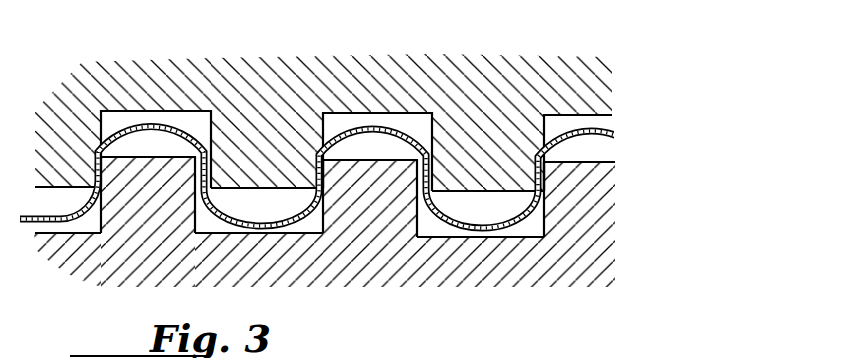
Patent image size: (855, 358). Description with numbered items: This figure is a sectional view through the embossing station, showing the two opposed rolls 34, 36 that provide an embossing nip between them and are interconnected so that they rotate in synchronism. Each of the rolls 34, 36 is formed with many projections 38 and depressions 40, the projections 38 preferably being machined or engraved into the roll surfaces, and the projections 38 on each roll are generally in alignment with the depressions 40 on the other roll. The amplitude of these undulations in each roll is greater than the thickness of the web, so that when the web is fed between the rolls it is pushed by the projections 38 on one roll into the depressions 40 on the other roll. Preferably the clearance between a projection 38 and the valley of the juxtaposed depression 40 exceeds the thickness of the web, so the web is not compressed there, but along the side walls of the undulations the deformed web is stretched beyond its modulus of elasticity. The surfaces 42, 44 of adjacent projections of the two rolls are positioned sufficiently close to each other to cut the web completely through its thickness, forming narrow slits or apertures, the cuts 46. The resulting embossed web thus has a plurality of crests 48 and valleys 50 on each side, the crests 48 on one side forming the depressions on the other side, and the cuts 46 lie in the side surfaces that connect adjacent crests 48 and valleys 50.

The roll 34 is at (587, 100).
The roll 36 is at (583, 227).
The projections 38 is at (247, 160).
The depressions 40 is at (121, 117).
The surface 42 is at (325, 168).
The surface 44 is at (322, 188).
The cuts 46 is at (489, 357).
The crests 48 is at (153, 123).
The valleys 50 is at (270, 232).